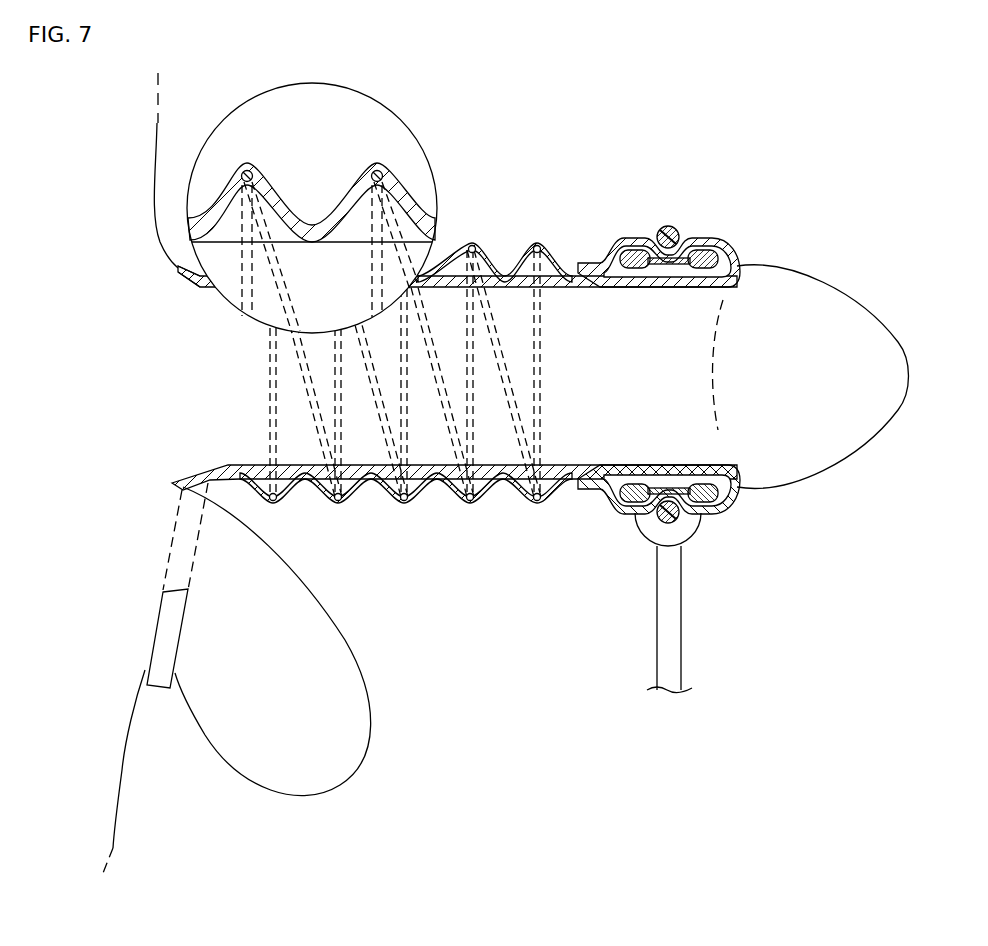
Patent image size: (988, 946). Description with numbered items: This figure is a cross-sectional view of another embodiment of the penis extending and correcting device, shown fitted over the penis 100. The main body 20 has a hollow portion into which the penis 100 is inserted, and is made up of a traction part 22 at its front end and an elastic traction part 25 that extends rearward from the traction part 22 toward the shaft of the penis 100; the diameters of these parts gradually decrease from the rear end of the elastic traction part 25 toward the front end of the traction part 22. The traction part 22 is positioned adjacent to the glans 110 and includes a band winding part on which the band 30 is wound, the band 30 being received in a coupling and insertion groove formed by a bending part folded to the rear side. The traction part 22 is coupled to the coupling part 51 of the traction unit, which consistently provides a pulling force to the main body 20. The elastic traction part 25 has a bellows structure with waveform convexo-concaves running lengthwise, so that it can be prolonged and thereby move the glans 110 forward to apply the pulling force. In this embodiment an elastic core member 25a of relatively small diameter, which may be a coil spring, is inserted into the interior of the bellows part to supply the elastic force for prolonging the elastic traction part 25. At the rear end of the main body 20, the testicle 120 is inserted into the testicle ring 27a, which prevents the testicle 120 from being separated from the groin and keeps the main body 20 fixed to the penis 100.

The main body 20 is at (456, 291).
The traction part 22 is at (634, 222).
The elastic traction part 25 is at (478, 232).
The elastic core member 25a is at (247, 170).
The testicle ring 27a is at (158, 675).
The band 30 is at (718, 248).
The coupling part 51 is at (672, 632).
The penis 100 is at (540, 381).
The glans 110 is at (811, 452).
The testicle 120 is at (335, 688).